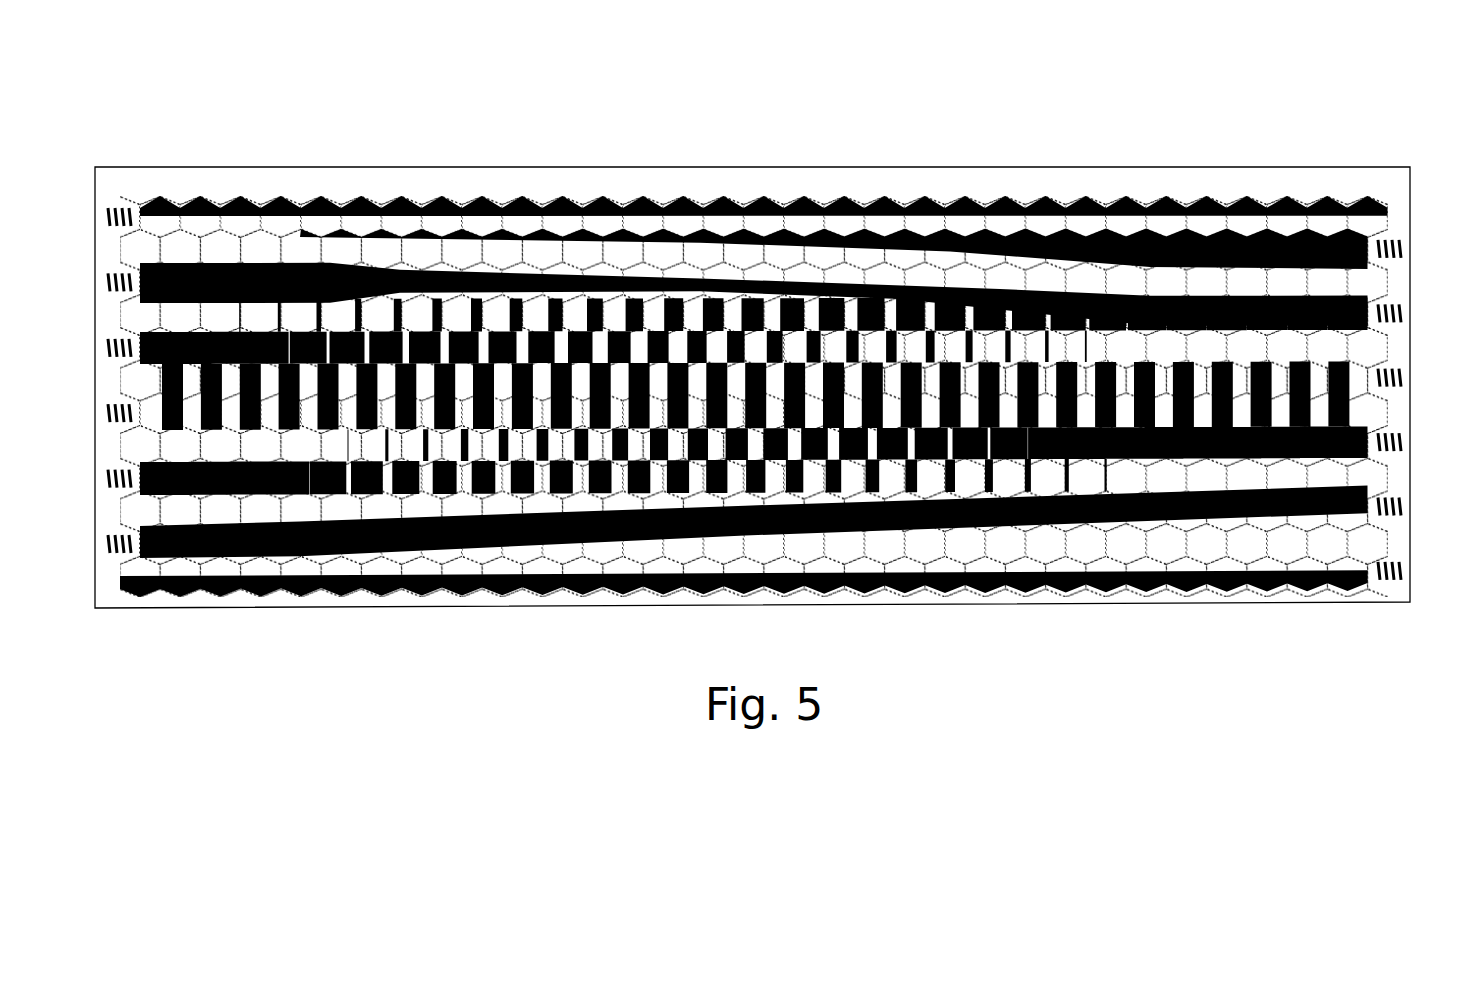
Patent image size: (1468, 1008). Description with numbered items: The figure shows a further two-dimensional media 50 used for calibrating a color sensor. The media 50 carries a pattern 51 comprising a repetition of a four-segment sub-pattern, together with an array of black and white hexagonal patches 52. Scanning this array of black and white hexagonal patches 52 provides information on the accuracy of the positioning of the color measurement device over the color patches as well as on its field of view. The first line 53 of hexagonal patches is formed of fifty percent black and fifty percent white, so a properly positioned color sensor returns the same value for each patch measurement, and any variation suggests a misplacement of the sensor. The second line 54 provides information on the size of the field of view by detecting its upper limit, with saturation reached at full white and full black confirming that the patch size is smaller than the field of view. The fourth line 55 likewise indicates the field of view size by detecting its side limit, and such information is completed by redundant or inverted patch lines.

The two-dimensional media 50 is at (962, 164).
The pattern 51 is at (1387, 600).
The array of black and white hexagonal patches 52 is at (963, 538).
The first line of hexagonal patches 53 is at (168, 208).
The second line 54 is at (333, 246).
The fourth line 55 is at (390, 312).